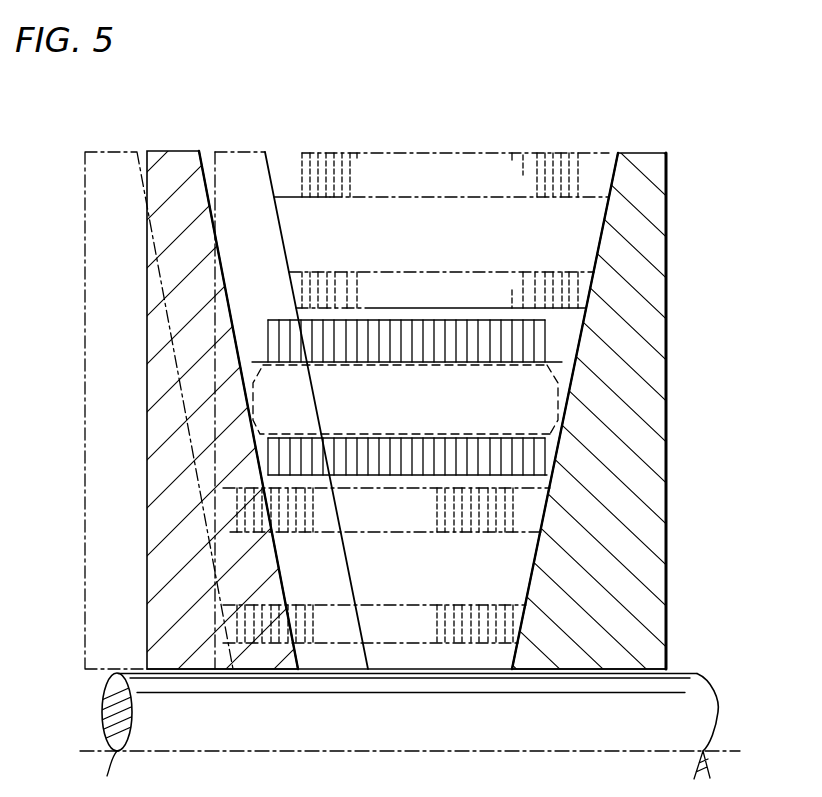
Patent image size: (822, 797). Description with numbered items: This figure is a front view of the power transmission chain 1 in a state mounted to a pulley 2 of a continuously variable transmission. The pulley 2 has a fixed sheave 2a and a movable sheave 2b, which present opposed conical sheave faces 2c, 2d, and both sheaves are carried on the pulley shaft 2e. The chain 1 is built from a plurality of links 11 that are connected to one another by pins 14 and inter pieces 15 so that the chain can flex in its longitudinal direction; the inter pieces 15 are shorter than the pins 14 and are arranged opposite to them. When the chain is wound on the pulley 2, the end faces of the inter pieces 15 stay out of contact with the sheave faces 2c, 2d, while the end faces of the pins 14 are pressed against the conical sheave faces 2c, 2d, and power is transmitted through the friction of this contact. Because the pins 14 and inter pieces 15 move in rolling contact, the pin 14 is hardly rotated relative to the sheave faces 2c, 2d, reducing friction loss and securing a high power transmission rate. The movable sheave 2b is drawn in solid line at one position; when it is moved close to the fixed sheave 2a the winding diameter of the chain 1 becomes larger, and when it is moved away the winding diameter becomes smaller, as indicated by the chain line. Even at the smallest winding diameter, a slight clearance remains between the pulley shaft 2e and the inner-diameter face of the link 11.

The power transmission chain 1 is at (416, 418).
The pulley 2 is at (421, 398).
The fixed sheave 2a is at (647, 525).
The movable sheave 2b is at (124, 152).
The conical sheave face 2c is at (600, 232).
The conical sheave face 2d is at (208, 248).
The pulley shaft 2e is at (695, 723).
The link 11 is at (301, 333).
The pin 14 is at (557, 372).
The inter piece 15 is at (555, 417).